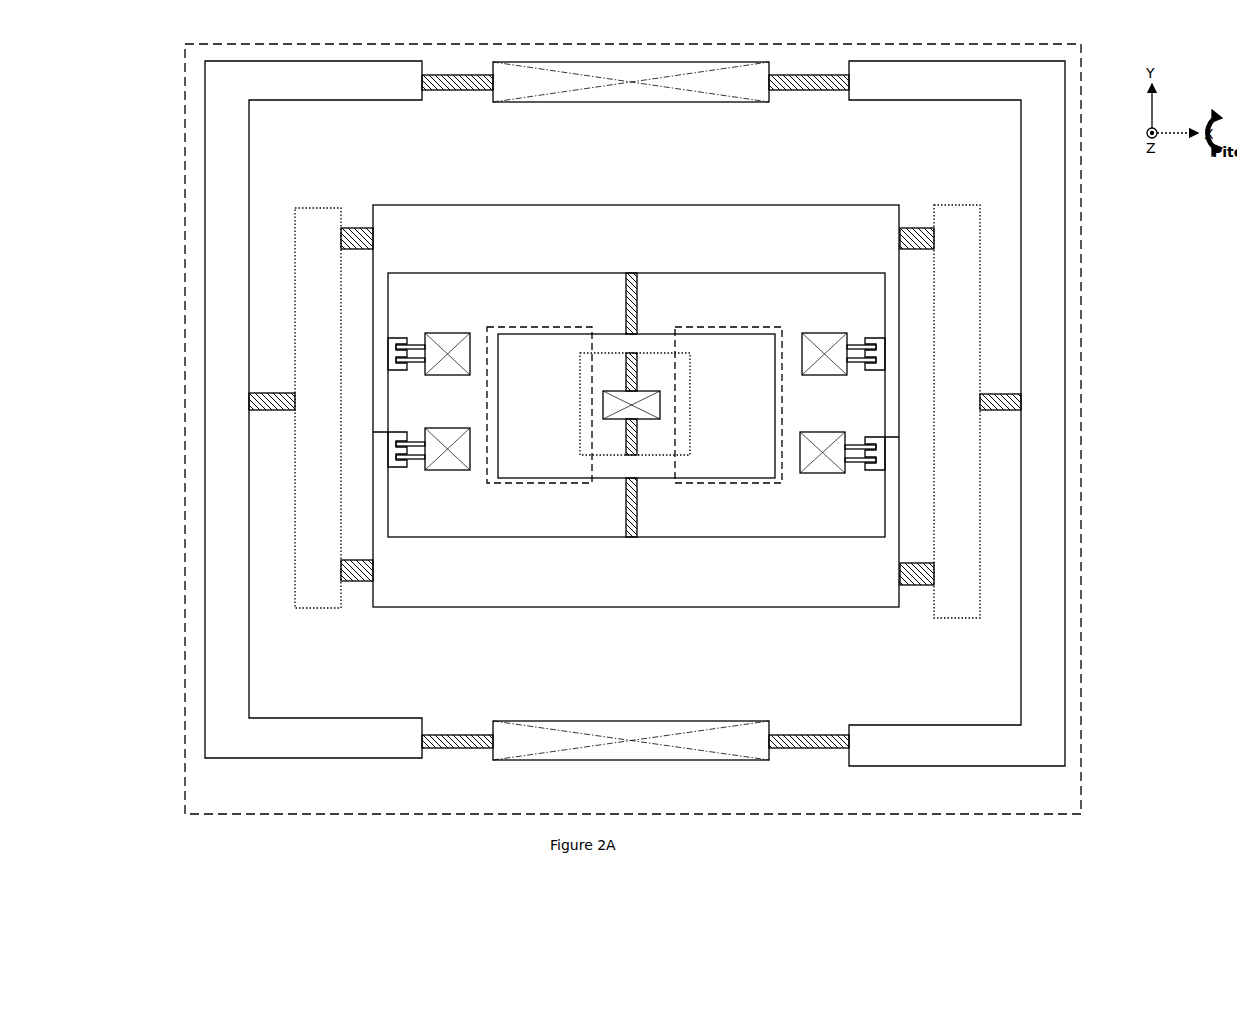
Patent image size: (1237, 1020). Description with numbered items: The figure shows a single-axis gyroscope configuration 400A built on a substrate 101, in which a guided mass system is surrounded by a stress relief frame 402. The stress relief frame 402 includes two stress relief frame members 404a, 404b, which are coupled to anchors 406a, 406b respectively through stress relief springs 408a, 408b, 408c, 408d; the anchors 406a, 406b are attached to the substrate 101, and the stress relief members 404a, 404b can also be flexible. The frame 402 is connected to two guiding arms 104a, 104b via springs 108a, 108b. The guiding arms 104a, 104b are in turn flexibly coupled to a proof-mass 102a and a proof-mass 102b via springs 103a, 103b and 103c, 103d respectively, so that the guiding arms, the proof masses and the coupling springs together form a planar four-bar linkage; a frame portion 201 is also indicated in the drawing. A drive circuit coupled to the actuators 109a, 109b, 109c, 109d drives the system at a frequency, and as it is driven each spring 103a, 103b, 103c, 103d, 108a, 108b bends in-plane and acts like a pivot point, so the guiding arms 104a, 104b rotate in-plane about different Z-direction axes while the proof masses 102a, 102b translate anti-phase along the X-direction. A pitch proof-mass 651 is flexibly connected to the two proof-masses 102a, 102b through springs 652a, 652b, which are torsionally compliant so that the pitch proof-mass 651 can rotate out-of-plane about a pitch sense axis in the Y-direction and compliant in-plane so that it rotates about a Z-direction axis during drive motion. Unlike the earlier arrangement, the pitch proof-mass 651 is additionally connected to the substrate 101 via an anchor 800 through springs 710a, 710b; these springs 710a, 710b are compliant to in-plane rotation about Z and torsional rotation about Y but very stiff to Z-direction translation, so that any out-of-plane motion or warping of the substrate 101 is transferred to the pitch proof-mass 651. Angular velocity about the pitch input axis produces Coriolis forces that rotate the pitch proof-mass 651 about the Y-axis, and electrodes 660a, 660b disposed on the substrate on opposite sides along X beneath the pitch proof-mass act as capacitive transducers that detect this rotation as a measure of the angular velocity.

The substrate 101 is at (1082, 229).
The frame 201 is at (840, 148).
The stress relief frame 402 is at (1065, 503).
The stress relief frame member 404a is at (247, 372).
The stress relief frame member 404b is at (1060, 385).
The anchor 406a is at (670, 760).
The anchor 406b is at (658, 102).
The stress relief spring 408a is at (455, 746).
The stress relief spring 408b is at (805, 748).
The stress relief spring 408c is at (462, 88).
The stress relief spring 408d is at (822, 88).
The guiding arm 104a is at (294, 290).
The guiding arm 104b is at (983, 312).
The spring 108a is at (285, 394).
The spring 108b is at (990, 393).
The spring 103a is at (352, 582).
The spring 103b is at (920, 587).
The spring 103c is at (353, 227).
The spring 103d is at (918, 226).
The proof-mass 102a is at (835, 608).
The proof-mass 102b is at (652, 240).
The pitch gyroscope 400A is at (654, 646).
The pitch proof-mass 651 is at (765, 373).
The spring 652a is at (640, 508).
The spring 652b is at (641, 318).
The electrode 660a is at (487, 392).
The electrode 660b is at (782, 376).
The spring 710a is at (628, 388).
The spring 710b is at (632, 447).
The anchor 800 is at (646, 392).
The actuator 109a is at (455, 471).
The actuator 109b is at (828, 474).
The actuator 109c is at (440, 338).
The actuator 109d is at (820, 335).